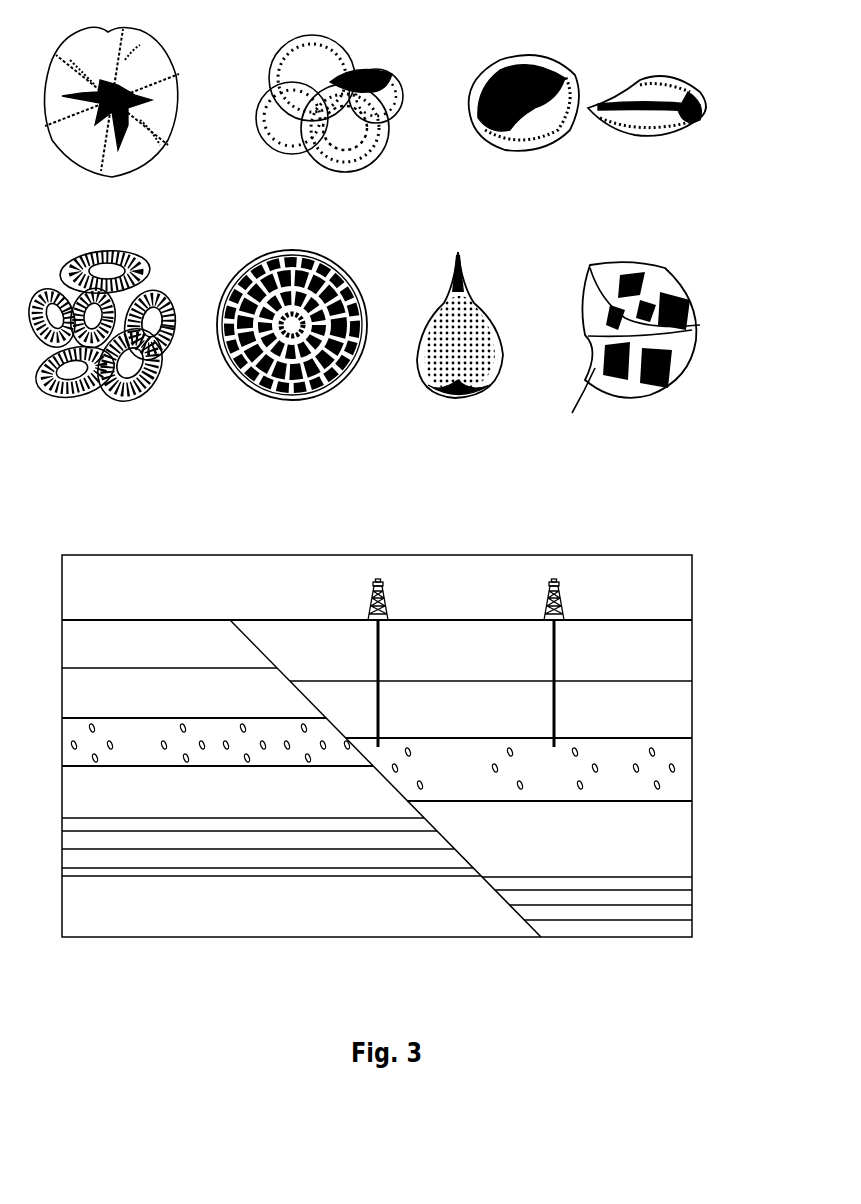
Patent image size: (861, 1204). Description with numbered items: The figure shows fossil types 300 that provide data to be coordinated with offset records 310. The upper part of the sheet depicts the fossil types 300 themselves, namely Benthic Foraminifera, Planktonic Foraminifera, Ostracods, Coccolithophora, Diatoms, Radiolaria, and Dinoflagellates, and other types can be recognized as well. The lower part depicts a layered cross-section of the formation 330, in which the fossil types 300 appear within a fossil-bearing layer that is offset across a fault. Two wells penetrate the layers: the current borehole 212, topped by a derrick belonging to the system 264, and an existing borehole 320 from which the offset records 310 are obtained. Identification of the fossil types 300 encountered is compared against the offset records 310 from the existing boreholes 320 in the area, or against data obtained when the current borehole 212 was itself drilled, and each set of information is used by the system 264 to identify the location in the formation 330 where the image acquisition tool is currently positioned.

The fossil types 300 is at (708, 50).
The offset records 310 is at (700, 621).
The system 264 is at (390, 596).
The current borehole 212 is at (380, 656).
The boreholes 320 is at (556, 656).
The formation 330 is at (308, 913).